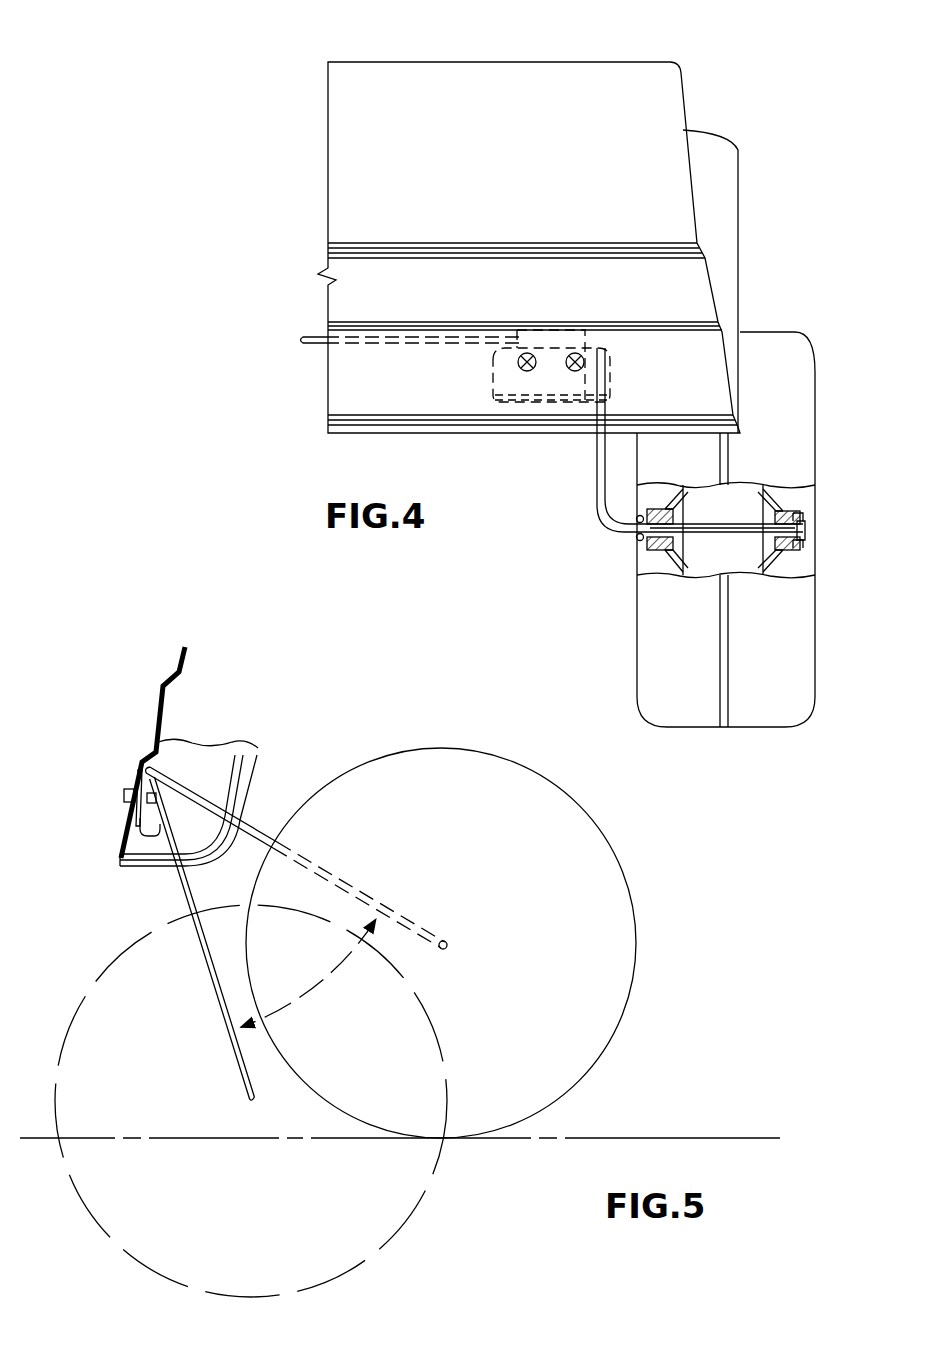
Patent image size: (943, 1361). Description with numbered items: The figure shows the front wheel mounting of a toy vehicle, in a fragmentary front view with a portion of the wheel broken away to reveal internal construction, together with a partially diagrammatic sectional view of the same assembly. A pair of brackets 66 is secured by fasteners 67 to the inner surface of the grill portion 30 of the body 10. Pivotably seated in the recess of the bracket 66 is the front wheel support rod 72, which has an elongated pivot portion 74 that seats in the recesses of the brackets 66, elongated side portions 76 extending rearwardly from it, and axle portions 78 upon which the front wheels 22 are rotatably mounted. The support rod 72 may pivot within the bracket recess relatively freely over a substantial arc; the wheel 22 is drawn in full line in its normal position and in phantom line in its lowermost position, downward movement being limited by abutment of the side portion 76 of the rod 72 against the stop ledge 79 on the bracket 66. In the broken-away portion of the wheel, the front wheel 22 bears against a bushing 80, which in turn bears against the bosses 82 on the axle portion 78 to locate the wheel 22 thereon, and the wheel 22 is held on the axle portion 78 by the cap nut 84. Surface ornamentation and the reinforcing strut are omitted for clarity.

In FIG. 4, the body 10 is at (690, 81).
In FIG. 4, the front wheel 22 is at (808, 634).
In FIG. 5, the front wheel 22 is at (632, 877).
In FIG. 4, the grill portion 30 is at (370, 379).
In FIG. 5, the grill portion 30 is at (157, 716).
In FIG. 4, the bracket 66 is at (494, 386).
In FIG. 5, the bracket 66 is at (128, 819).
In FIG. 4, the fasteners 67 is at (572, 352).
In FIG. 5, the fasteners 67 is at (128, 796).
In FIG. 4, the front wheel support rod 72 is at (590, 451).
In FIG. 5, the front wheel support rod 72 is at (202, 784).
In FIG. 4, the pivot portion 74 is at (322, 340).
In FIG. 4, the side portion 76 is at (597, 492).
In FIG. 5, the side portion 76 is at (262, 835).
In FIG. 4, the axle portion 78 is at (733, 527).
In FIG. 5, the stop ledge 79 is at (151, 839).
In FIG. 4, the bushing 80 is at (656, 548).
In FIG. 4, the bosses 82 is at (637, 539).
In FIG. 4, the cap nut 84 is at (806, 528).